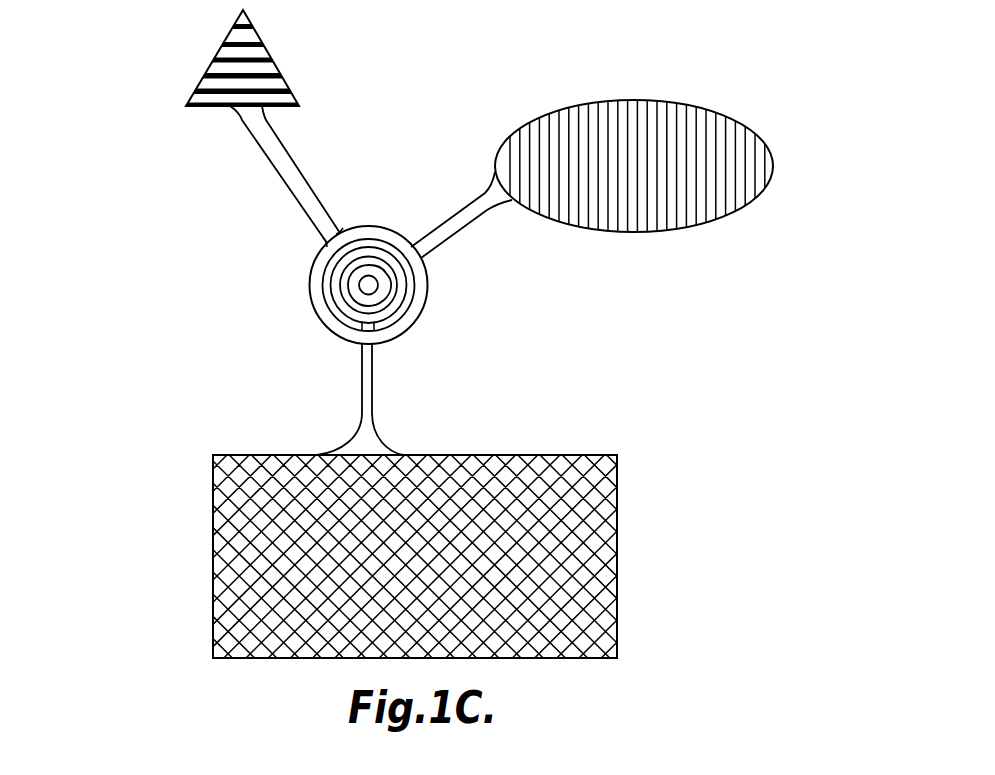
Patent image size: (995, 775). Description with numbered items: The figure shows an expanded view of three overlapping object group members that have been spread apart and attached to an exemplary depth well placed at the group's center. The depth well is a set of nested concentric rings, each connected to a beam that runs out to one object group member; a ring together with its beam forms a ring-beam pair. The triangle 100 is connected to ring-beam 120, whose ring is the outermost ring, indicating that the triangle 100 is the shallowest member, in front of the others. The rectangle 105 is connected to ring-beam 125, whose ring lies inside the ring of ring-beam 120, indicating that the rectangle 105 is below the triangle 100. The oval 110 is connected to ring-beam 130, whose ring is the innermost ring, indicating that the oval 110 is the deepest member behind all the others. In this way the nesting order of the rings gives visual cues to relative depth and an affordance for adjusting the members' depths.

The triangle 100 is at (277, 62).
The rectangle 105 is at (617, 565).
The oval 110 is at (773, 163).
The ring-beam 120 is at (298, 172).
The ring-beam 125 is at (372, 390).
The ring-beam 130 is at (449, 235).